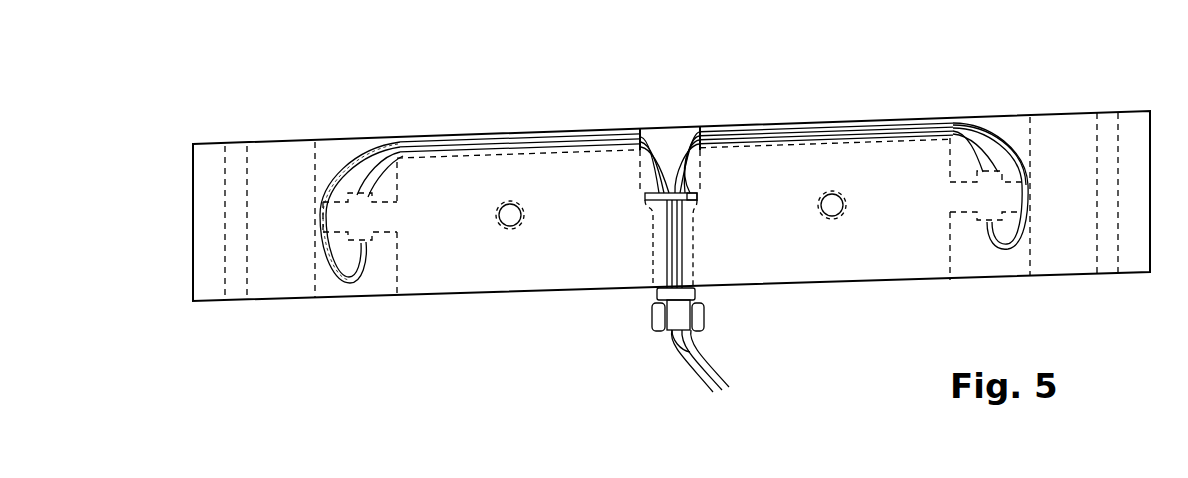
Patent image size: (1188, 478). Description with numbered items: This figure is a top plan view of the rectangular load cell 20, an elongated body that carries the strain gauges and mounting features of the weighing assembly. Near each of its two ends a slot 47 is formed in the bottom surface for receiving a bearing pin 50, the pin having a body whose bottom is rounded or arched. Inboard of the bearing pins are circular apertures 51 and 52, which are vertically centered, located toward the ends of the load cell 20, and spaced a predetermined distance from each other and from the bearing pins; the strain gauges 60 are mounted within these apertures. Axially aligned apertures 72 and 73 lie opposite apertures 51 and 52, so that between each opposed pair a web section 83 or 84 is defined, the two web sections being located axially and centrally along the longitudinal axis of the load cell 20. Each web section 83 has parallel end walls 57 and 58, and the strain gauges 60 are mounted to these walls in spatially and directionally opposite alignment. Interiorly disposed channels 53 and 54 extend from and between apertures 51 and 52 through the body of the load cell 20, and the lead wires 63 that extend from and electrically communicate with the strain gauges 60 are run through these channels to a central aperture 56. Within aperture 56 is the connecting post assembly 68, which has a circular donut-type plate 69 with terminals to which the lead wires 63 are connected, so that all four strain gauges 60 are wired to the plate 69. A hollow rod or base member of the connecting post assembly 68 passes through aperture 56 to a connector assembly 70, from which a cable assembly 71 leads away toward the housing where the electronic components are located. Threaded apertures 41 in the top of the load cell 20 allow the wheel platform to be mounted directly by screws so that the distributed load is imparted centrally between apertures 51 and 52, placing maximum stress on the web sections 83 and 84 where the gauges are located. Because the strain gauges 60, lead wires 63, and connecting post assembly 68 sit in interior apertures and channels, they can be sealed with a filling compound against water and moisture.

The load cell 20 is at (1052, 125).
The threaded apertures 41 is at (522, 224).
The slot 47 is at (235, 145).
The bearing pin 50 is at (1105, 123).
The circular aperture 51 is at (363, 288).
The circular aperture 52 is at (995, 263).
The channel 53 is at (553, 133).
The channel 54 is at (865, 125).
The aperture 56 is at (671, 133).
The end wall 57 is at (377, 202).
The end wall 58 is at (384, 234).
The strain gauge 60 is at (348, 178).
The lead wires 63 is at (368, 146).
The connecting post assembly 68 is at (661, 218).
The circular plate 69 is at (690, 193).
The connector assembly 70 is at (693, 297).
The cable assembly 71 is at (683, 352).
The aperture 72 is at (323, 145).
The aperture 73 is at (998, 118).
The web section 83 is at (385, 220).
The web section 84 is at (958, 200).